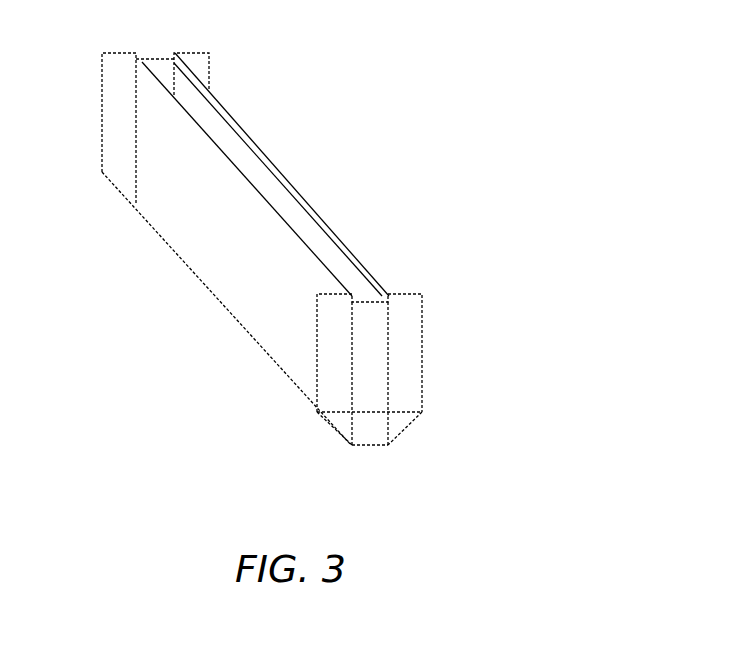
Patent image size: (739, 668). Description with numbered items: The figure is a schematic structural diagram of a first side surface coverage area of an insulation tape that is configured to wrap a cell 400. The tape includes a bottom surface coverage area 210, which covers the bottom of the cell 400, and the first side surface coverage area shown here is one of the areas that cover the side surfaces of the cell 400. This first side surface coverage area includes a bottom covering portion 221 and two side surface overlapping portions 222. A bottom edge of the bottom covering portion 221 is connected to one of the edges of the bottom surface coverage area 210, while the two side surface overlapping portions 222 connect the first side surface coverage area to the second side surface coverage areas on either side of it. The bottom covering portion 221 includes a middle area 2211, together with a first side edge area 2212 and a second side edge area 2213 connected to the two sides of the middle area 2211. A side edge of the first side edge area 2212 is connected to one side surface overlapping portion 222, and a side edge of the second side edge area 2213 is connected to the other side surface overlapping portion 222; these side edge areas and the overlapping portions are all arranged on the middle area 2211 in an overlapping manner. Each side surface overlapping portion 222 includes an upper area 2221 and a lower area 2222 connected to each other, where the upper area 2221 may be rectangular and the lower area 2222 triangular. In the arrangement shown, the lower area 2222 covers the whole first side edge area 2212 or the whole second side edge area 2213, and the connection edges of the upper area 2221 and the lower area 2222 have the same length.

The bottom surface coverage area 210 is at (228, 309).
The cell 400 is at (317, 174).
The side surface overlapping portion 222 is at (495, 379).
The upper area 2221 is at (325, 397).
The lower area 2222 is at (328, 422).
The bottom covering portion 221 is at (495, 440).
The second side edge area 2213 is at (441, 431).
The middle area 2211 is at (424, 449).
The first side edge area 2212 is at (423, 482).